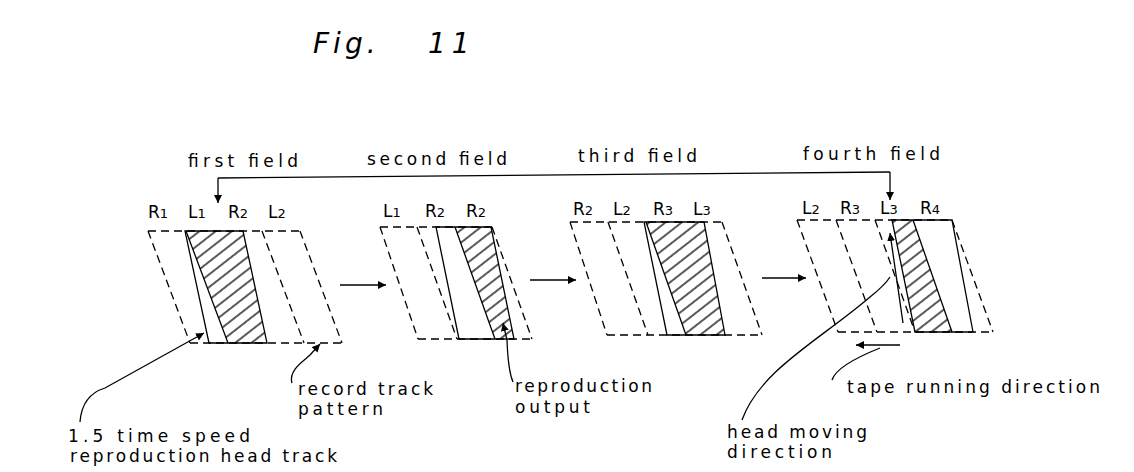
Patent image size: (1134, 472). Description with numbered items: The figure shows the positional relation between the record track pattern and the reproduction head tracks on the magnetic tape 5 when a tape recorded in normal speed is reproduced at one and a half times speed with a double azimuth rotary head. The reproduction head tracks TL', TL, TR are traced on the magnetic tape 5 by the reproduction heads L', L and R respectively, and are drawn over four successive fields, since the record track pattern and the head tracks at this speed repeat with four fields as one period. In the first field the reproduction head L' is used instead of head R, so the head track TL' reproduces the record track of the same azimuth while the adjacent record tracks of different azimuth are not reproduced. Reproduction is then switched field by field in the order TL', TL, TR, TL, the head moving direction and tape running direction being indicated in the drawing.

The magnetic tape 5 is at (570, 282).
The reproduction head track TL' is at (226, 313).
The reproduction head track TL is at (717, 307).
The reproduction head track TR is at (695, 336).